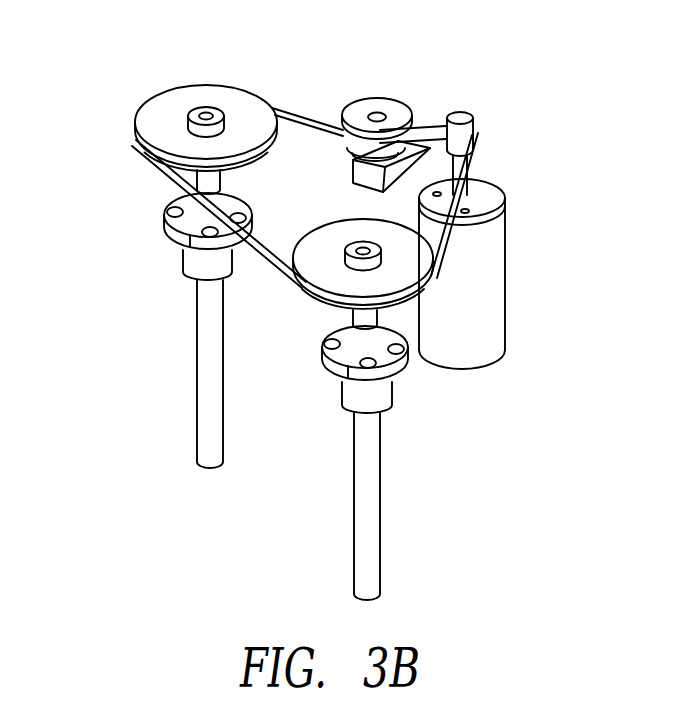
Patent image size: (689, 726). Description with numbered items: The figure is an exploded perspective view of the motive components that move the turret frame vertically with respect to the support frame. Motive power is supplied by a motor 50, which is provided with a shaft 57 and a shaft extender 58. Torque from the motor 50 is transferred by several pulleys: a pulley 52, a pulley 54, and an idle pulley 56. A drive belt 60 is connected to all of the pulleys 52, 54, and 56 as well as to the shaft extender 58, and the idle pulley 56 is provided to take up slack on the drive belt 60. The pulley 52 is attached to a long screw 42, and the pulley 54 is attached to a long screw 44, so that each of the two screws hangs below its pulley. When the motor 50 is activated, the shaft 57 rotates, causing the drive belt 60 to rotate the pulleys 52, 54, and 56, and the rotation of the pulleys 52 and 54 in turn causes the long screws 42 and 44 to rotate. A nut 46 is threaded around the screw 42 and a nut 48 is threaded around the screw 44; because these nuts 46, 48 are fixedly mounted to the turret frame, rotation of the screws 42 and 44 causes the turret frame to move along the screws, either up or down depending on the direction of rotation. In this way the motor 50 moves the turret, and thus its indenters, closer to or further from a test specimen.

The long screw 42 is at (190, 362).
The long screw 44 is at (367, 500).
The nut 46 is at (165, 218).
The nut 48 is at (400, 363).
The motor 50 is at (472, 352).
The pulley 52 is at (163, 120).
The pulley 54 is at (416, 269).
The idle pulley 56 is at (378, 103).
The shaft 57 is at (474, 179).
The shaft extender 58 is at (462, 130).
The drive belt 60 is at (274, 278).